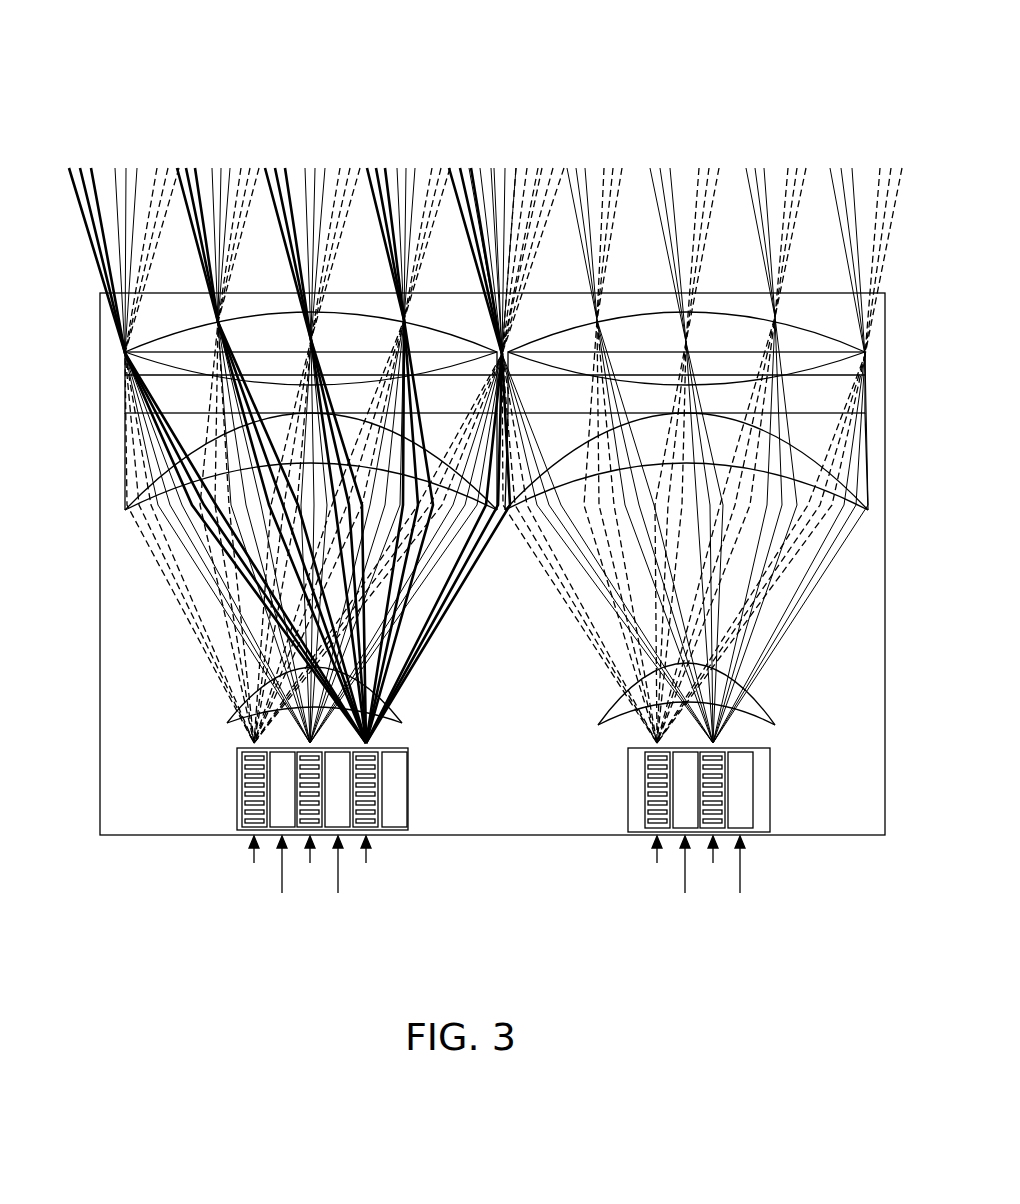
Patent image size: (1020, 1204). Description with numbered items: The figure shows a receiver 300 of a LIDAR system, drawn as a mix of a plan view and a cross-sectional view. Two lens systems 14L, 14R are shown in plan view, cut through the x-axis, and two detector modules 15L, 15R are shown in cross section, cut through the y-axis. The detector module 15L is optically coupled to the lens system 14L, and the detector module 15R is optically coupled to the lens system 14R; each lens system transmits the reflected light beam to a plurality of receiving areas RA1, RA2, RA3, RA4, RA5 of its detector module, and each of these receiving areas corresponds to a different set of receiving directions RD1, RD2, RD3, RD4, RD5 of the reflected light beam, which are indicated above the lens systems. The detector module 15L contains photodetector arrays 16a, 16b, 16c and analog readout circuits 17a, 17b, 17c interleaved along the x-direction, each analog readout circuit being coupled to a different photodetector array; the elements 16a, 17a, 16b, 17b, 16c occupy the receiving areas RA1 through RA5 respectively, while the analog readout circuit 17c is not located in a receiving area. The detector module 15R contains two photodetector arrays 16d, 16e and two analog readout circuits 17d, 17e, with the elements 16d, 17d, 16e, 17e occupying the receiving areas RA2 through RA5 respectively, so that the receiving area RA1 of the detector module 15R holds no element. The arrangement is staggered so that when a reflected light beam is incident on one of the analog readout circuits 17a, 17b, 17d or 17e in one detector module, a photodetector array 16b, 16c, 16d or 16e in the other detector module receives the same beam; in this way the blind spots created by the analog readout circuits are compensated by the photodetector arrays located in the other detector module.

The receiver 300 is at (100, 777).
The lens system 14L is at (95, 300).
The lens system 14R is at (885, 300).
The detector module 15L is at (322, 781).
The detector module 15R is at (711, 792).
The photodetector array 16a is at (243, 812).
The photodetector array 16b is at (318, 783).
The photodetector array 16c is at (373, 803).
The photodetector array 16d is at (645, 765).
The photodetector array 16e is at (720, 812).
The analog readout circuit 17a is at (270, 760).
The analog readout circuit 17b is at (345, 815).
The analog readout circuit 17c is at (404, 770).
The analog readout circuit 17d is at (673, 805).
The analog readout circuit 17e is at (750, 757).
The receiving direction RD1 is at (176, 165).
The receiving direction RD2 is at (535, 165).
The receiving direction RD3 is at (113, 165).
The receiving direction RD4 is at (488, 165).
The receiving direction RD5 is at (68, 165).
The receiving area RA1 is at (253, 864).
The receiving area RA2 is at (469, 879).
The receiving area RA3 is at (497, 879).
The receiving area RA4 is at (525, 879).
The receiving area RA5 is at (552, 879).